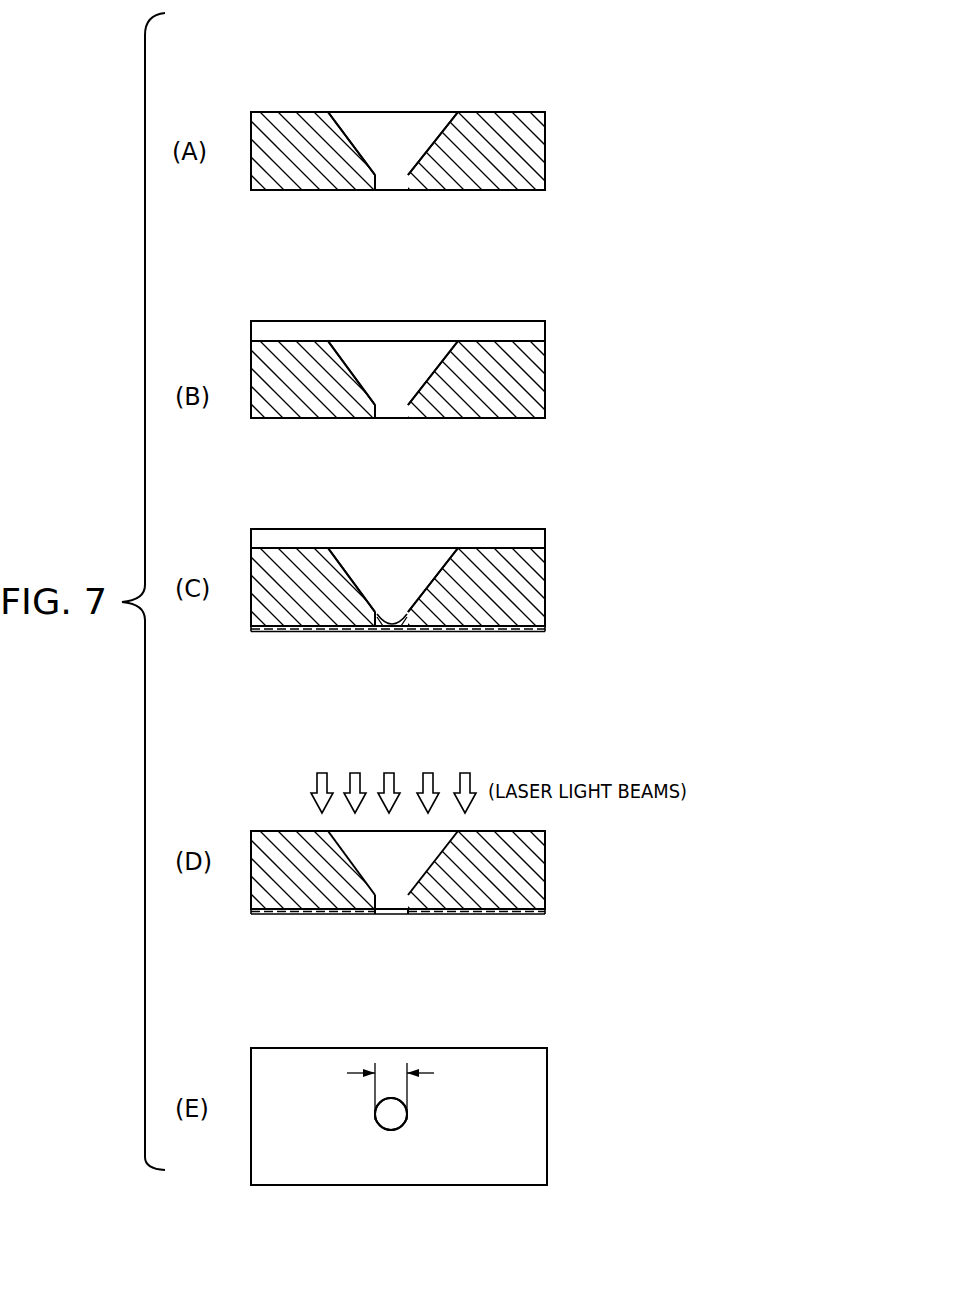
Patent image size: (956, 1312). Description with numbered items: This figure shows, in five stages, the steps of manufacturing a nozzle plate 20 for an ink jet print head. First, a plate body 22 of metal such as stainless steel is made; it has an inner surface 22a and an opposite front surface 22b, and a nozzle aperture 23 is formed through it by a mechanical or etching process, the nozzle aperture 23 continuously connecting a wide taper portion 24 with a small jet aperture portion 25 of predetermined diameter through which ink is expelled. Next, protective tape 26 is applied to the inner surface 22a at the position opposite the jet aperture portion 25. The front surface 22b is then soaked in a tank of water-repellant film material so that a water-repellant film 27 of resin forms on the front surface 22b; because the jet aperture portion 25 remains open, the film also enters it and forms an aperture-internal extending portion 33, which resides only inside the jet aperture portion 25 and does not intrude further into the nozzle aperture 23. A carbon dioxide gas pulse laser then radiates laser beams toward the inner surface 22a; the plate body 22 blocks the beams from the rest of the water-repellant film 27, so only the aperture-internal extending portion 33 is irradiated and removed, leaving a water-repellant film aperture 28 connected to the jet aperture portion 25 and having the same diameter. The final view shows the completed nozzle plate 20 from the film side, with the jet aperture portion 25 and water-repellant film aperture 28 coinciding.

The nozzle plate 20 is at (548, 875).
The plate body 22 is at (533, 110).
The inner surface 22a is at (472, 112).
The front surface 22b is at (536, 190).
The nozzle aperture 23 is at (393, 137).
The taper portion 24 is at (347, 855).
The jet aperture portion 25 is at (402, 182).
The protective tape 26 is at (505, 330).
The water-repellant film 27 is at (502, 633).
The water-repellant film aperture 28 is at (403, 914).
The aperture-internal extending portion 33 is at (392, 625).